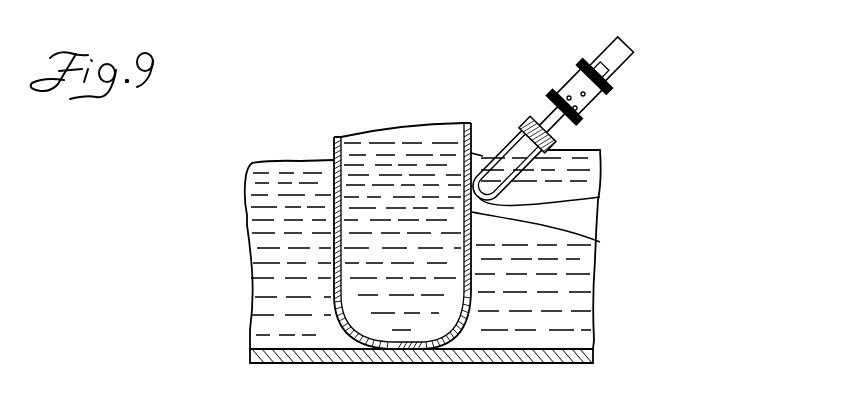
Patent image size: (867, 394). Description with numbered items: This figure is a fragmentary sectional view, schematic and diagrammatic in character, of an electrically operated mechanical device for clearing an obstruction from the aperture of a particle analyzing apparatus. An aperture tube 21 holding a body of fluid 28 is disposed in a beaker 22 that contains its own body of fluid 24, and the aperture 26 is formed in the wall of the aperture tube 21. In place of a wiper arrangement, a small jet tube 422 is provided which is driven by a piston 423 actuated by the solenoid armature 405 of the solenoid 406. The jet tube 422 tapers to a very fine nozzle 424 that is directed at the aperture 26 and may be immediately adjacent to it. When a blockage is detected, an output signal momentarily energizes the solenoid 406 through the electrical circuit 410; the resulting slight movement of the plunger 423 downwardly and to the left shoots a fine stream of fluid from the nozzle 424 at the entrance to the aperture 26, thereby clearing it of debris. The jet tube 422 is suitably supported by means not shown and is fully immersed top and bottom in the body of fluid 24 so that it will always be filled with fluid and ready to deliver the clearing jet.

The aperture tube 21 is at (335, 151).
The beaker 22 is at (593, 359).
The body of fluid 24 is at (262, 217).
The aperture 26 is at (670, 244).
The body of fluid 28 is at (402, 134).
The solenoid armature 405 is at (598, 60).
The solenoid 406 is at (562, 84).
The electrical circuit 410 is at (612, 22).
The jet tube 422 is at (520, 126).
The piston 423 is at (560, 150).
The nozzle 424 is at (599, 197).